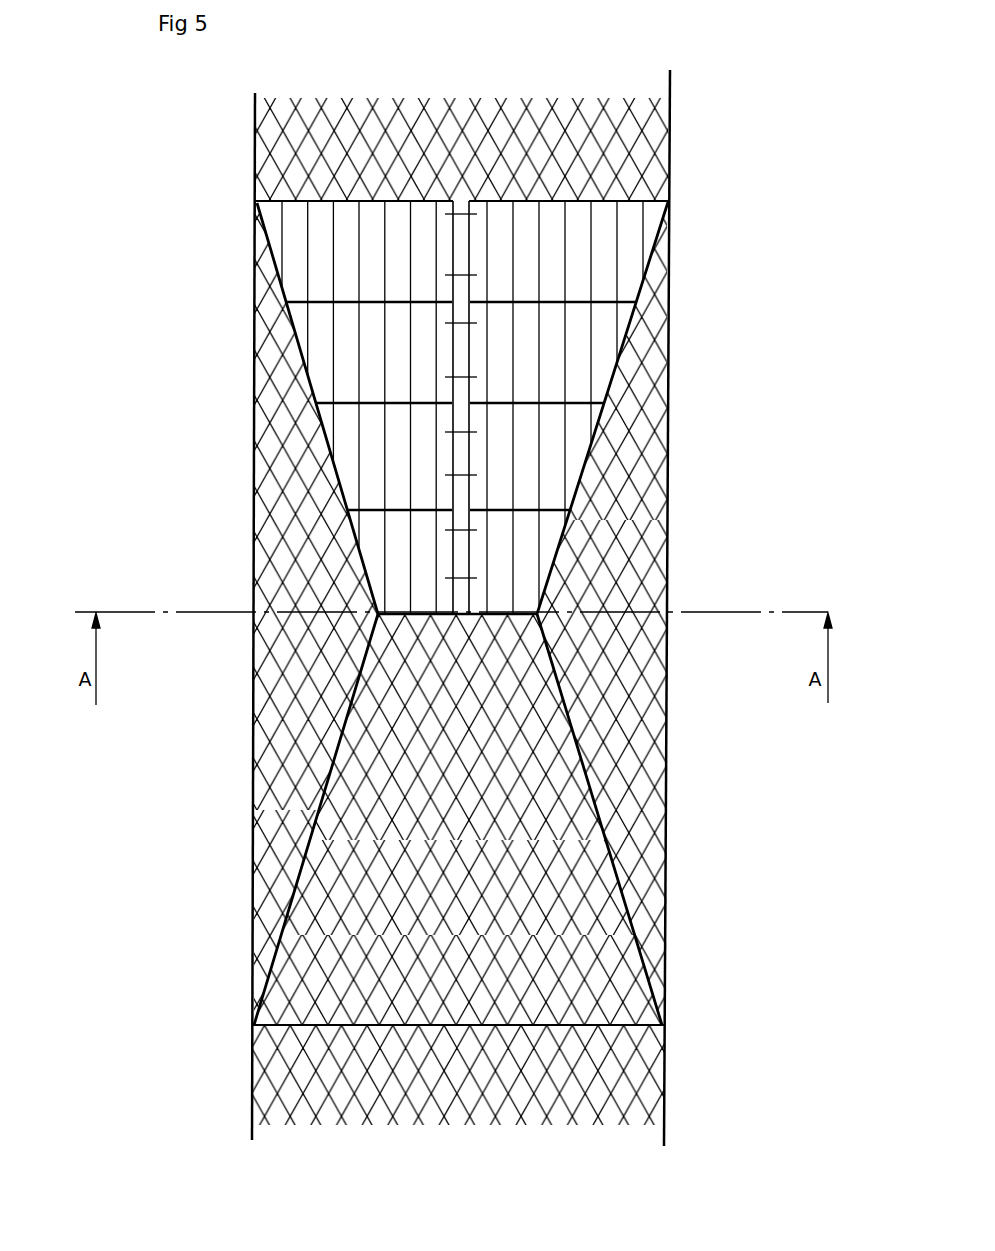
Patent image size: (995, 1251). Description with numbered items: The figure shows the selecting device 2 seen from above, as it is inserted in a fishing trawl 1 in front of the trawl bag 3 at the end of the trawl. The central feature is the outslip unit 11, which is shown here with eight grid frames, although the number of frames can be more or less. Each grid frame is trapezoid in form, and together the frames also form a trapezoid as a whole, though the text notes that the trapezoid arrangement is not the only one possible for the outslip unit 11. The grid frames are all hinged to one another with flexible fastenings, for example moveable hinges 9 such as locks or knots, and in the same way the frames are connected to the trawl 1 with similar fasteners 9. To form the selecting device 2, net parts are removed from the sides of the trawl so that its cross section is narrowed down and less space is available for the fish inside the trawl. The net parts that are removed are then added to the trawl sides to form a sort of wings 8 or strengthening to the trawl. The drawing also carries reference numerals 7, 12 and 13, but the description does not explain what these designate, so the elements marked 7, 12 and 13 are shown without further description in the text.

The trawl 1 is at (538, 113).
The selecting device 2 is at (708, 224).
The trawl bag 3 is at (593, 1095).
The side walls 7 is at (670, 125).
The wings 8 is at (255, 522).
The moveable hinges 9 is at (320, 302).
The outslip unit 11 is at (308, 338).
The inclined boundary lines 12 is at (310, 387).
The lower fill region 13 is at (560, 888).